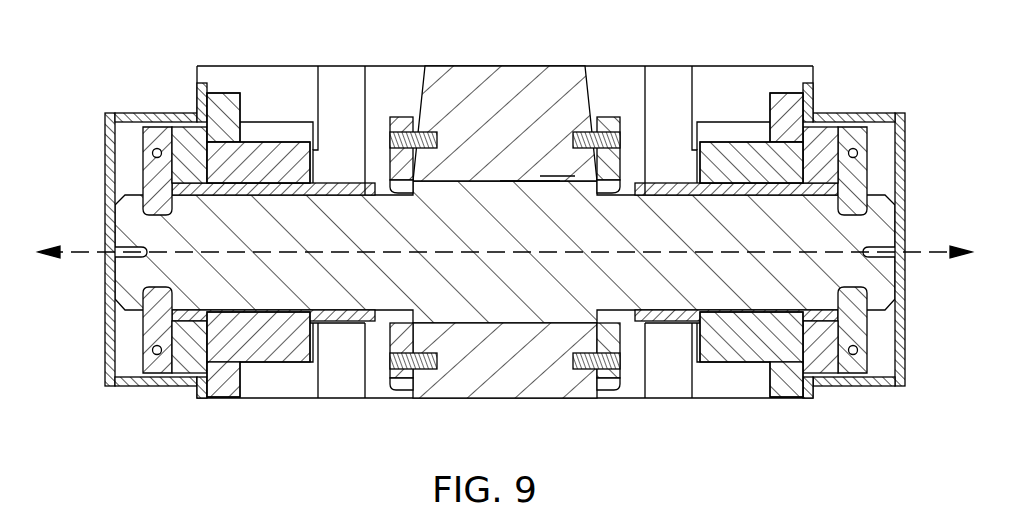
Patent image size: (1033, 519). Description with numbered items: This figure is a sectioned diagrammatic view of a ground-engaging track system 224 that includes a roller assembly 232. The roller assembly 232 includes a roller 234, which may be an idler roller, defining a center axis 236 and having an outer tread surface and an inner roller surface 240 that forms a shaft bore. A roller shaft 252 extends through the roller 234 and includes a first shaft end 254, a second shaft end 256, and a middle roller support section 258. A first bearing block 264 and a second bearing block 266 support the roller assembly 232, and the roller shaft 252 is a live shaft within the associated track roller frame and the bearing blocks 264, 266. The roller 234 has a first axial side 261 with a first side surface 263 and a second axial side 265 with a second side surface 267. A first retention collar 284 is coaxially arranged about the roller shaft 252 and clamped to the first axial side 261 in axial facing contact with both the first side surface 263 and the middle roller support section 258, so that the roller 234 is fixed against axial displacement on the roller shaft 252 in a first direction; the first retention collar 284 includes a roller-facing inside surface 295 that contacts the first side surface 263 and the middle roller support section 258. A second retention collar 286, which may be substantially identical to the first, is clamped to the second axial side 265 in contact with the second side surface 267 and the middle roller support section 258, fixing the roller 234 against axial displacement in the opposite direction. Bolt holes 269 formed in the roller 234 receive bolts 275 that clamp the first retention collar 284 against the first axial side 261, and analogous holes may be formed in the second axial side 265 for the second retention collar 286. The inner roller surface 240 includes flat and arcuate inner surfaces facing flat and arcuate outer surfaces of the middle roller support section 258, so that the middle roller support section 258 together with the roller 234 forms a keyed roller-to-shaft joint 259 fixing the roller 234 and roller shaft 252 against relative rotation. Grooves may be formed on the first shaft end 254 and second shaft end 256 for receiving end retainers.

The ground-engaging track system 224 is at (850, 82).
The roller assembly 232 is at (510, 55).
The roller 234 is at (510, 393).
The center axis 236 is at (78, 250).
The inner roller surface 240 is at (470, 181).
The roller shaft 252 is at (625, 300).
The first shaft end 254 is at (250, 296).
The second shaft end 256 is at (790, 296).
The middle roller support section 258 is at (525, 182).
The keyed roller-to-shaft joint 259 is at (557, 173).
The first axial side 261 is at (405, 92).
The first side surface 263 is at (417, 108).
The first bearing block 264 is at (207, 92).
The second axial side 265 is at (597, 92).
The second bearing block 266 is at (787, 95).
The second side surface 267 is at (618, 152).
The bolt holes 269 is at (418, 360).
The bolts 275 is at (438, 357).
The first retention collar 284 is at (386, 117).
The second retention collar 286 is at (624, 117).
The roller-facing inside surface 295 is at (420, 390).